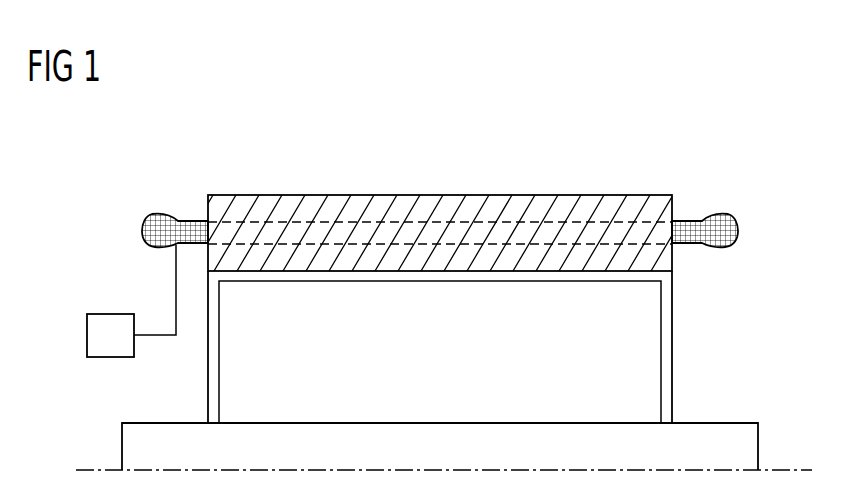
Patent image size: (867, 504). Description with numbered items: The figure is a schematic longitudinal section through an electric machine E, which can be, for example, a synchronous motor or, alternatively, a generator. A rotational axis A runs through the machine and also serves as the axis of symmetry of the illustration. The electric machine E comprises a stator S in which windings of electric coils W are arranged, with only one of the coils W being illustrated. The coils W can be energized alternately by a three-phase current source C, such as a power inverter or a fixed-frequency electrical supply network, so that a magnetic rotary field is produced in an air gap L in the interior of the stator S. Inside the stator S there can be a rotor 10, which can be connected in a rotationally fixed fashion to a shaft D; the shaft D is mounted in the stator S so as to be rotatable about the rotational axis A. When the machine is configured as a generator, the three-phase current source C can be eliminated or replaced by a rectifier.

The stator S is at (598, 203).
The electric coils W is at (535, 221).
The electric machine E is at (702, 156).
The rotor 10 is at (645, 320).
The air gap L is at (655, 273).
The shaft D is at (737, 422).
The rotational axis A is at (798, 470).
The three-phase current source C is at (110, 314).